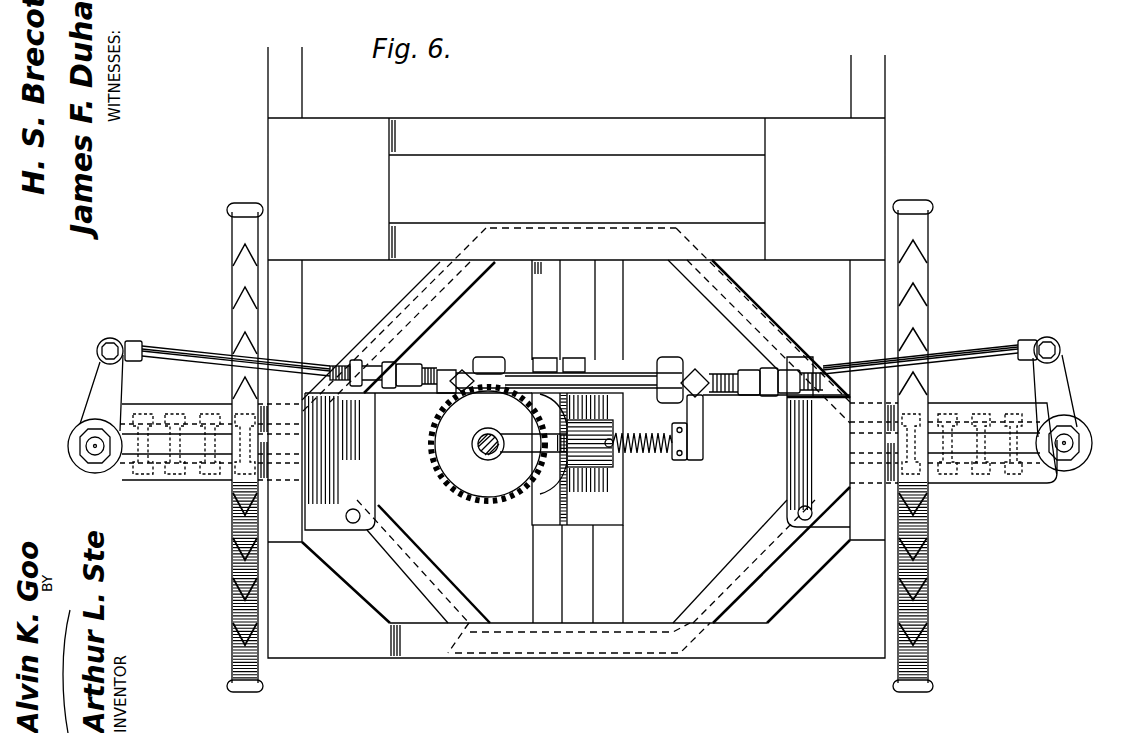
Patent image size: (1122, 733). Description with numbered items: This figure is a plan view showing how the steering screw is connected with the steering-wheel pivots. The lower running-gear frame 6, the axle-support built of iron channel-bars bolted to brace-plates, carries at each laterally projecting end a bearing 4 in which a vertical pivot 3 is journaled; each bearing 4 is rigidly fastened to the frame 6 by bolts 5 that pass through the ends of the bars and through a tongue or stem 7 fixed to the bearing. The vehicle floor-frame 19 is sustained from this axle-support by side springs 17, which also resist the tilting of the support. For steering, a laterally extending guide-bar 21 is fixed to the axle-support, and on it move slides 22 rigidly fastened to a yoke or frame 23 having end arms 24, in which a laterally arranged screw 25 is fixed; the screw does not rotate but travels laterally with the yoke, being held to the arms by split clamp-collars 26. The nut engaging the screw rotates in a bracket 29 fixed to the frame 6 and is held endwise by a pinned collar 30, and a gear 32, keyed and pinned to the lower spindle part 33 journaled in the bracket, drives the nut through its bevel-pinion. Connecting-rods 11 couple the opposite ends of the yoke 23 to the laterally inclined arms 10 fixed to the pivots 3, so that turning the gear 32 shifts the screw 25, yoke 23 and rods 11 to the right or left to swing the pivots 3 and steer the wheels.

The vertical pivot 3 is at (80, 461).
The bearing 4 is at (67, 452).
The bolts 5 is at (207, 417).
The lower running-gear frame 6 is at (410, 298).
The tongue or stem 7 is at (128, 490).
The arm 10 is at (87, 401).
The connecting-rod 11 is at (200, 352).
The side springs 17 is at (232, 275).
The bed or floor-frame 19 is at (523, 152).
The guide-bar 21 is at (627, 392).
The slides 22 is at (488, 357).
The yoke or frame 23 is at (583, 382).
The end arms 24 is at (697, 422).
The screw 25 is at (633, 453).
The split clamp-collars 26 is at (682, 460).
The bracket 29 is at (537, 453).
The pinned collar 30 is at (603, 478).
The gear 32 is at (452, 413).
The lower spindle part 33 is at (477, 444).